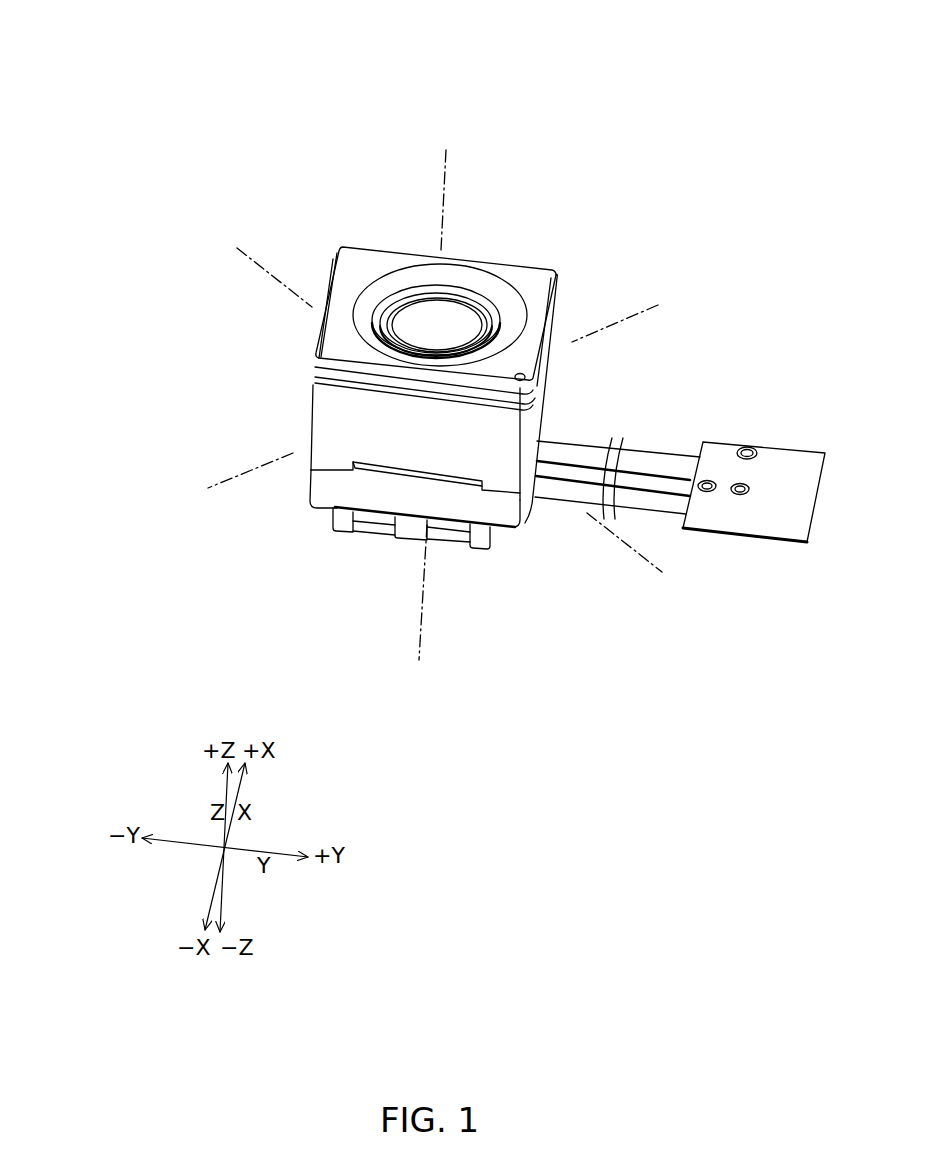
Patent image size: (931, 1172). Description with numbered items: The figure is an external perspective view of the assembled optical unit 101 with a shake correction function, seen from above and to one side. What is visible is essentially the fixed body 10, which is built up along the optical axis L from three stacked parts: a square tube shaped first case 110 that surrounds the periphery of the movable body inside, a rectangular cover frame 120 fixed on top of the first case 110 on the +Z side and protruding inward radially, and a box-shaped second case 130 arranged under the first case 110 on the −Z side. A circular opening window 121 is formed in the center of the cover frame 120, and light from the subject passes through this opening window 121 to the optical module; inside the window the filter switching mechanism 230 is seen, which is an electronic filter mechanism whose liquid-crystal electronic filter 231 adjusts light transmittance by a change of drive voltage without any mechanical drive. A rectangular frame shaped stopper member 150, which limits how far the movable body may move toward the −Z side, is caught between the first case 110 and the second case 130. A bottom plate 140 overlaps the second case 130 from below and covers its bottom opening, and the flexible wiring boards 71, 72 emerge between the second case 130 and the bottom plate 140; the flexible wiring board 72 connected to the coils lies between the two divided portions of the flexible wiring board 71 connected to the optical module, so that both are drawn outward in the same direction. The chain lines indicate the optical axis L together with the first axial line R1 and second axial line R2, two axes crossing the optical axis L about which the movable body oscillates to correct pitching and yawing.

The optical unit with a shake correction function 101 is at (292, 197).
The fixed body 10 is at (110, 315).
The first case 110 is at (313, 418).
The cover frame 120 is at (322, 336).
The opening window 121 is at (412, 302).
The second case 130 is at (390, 505).
The bottom plate 140 is at (382, 478).
The stopper member 150 is at (408, 538).
The filter switching mechanism 230 is at (478, 303).
The electronic filter 231 is at (452, 315).
The flexible wiring board 71 is at (567, 493).
The flexible wiring board 72 is at (570, 465).
The optical axis L is at (443, 153).
The first axial line R1 is at (643, 307).
The second axial line R2 is at (647, 560).